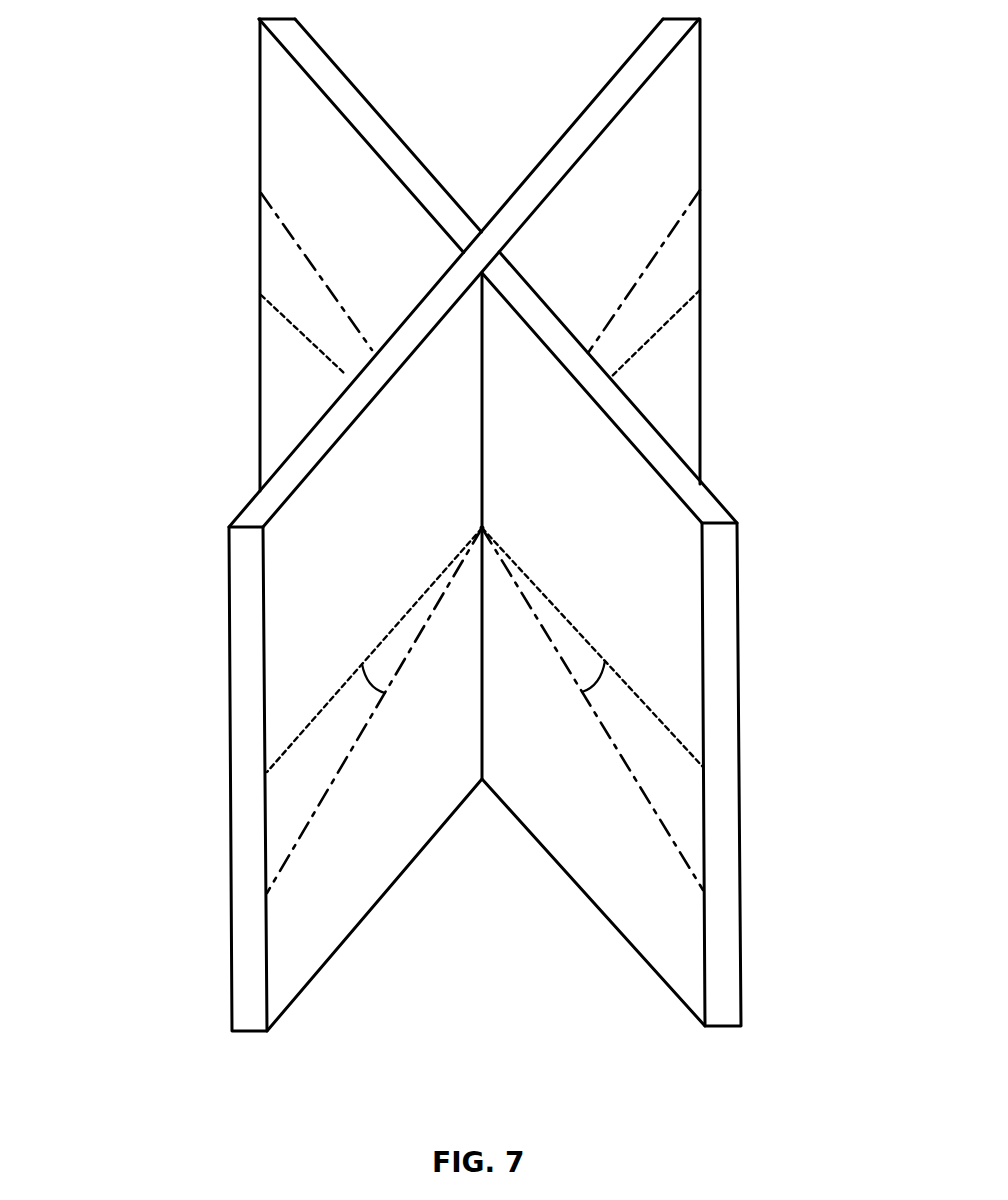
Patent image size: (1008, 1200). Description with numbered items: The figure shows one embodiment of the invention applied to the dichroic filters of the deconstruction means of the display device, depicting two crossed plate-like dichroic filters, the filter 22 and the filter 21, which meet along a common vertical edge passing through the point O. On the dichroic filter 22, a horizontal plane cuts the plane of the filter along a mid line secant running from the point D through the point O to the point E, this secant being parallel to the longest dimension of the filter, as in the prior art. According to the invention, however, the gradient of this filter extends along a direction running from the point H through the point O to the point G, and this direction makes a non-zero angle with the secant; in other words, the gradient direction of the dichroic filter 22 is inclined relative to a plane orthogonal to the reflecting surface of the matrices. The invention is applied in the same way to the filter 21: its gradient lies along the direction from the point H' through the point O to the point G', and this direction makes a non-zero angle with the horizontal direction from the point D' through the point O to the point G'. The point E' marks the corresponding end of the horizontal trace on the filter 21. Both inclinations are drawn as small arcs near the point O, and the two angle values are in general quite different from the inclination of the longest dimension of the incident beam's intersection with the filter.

The dichroic filter 21 is at (593, 522).
The dichroic filter 22 is at (363, 525).
The point O is at (494, 518).
The point D is at (374, 650).
The point D' is at (592, 647).
The point H is at (374, 731).
The point H' is at (592, 730).
The point G is at (668, 253).
The point G' is at (292, 243).
The point E is at (677, 319).
The point E' is at (280, 323).